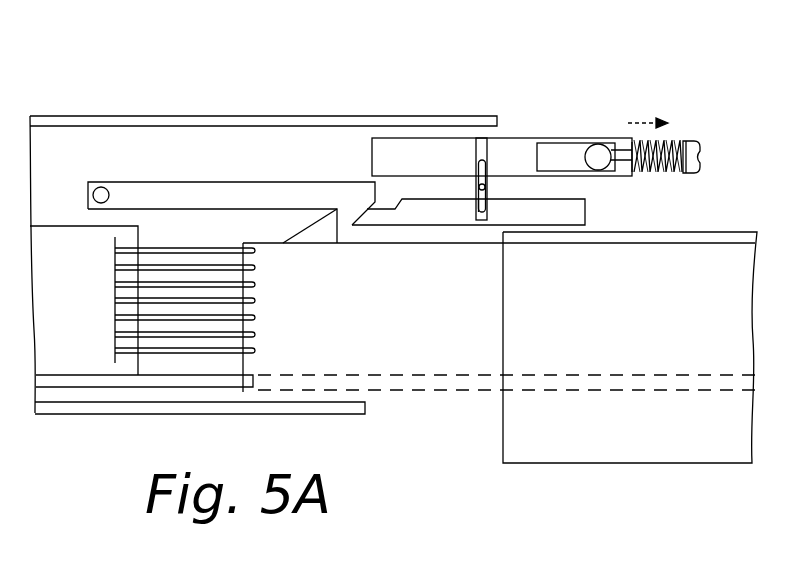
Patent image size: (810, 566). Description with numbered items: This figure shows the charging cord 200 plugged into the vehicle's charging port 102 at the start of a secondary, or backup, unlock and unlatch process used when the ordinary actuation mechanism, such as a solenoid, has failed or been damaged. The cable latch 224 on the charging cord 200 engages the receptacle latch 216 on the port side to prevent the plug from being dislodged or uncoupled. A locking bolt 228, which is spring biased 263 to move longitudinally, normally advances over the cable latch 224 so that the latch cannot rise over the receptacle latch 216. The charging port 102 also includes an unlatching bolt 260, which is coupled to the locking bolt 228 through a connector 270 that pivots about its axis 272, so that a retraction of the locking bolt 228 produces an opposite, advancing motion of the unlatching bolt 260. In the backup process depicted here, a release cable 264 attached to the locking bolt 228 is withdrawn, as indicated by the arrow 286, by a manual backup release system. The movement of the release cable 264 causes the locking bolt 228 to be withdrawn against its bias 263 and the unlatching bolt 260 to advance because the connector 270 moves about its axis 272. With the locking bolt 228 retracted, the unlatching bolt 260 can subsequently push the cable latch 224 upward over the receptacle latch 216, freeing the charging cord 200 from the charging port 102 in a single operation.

The charging cord 200 is at (178, 92).
The charging port 102 is at (689, 71).
The cable latch 224 is at (165, 188).
The receptacle latch 216 is at (323, 233).
The unlatching bolt 260 is at (585, 212).
The locking bolt 228 is at (565, 138).
The axis 272 is at (481, 187).
The connector 270 is at (470, 197).
The bias 263 is at (655, 176).
The release cable 264 is at (700, 141).
The arrow 286 is at (645, 118).